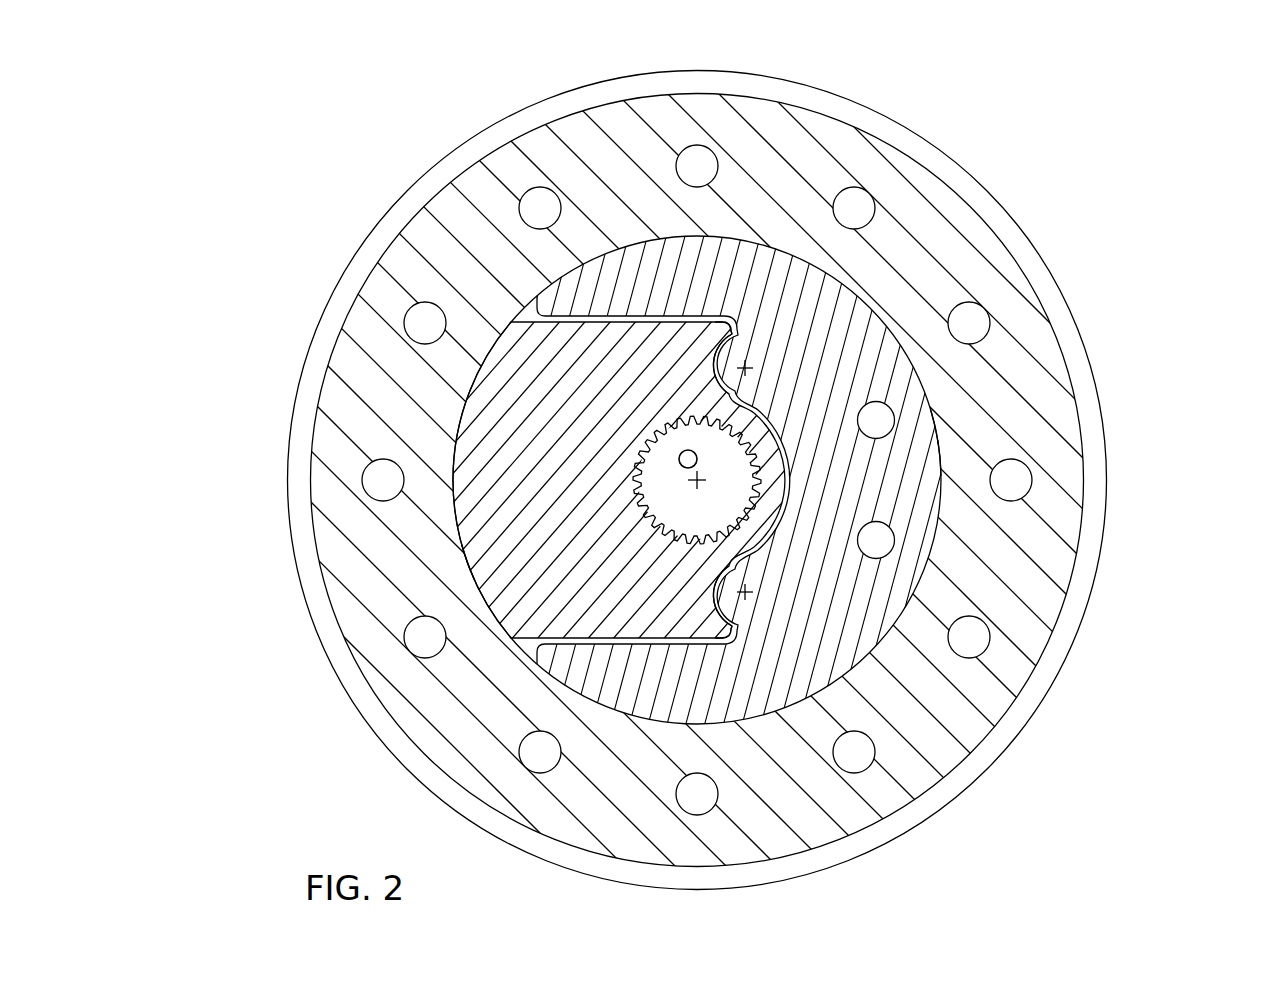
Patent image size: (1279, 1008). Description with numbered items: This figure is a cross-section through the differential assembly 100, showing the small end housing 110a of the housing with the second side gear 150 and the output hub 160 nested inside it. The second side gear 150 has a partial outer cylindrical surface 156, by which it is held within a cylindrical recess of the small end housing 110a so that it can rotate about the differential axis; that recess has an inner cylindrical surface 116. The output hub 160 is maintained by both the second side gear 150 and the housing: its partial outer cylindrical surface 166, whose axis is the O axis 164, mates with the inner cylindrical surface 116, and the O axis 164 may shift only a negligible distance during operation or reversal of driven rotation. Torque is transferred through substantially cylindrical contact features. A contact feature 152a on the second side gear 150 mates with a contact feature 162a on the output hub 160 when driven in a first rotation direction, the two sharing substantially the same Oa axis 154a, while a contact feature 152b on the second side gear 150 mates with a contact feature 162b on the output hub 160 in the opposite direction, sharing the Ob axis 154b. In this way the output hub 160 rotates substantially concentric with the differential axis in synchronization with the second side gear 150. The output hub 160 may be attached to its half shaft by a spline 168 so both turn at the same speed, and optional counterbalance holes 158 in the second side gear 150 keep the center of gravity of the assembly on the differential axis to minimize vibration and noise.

The differential assembly 100 is at (985, 125).
The small end housing 110a is at (583, 150).
The inner cylindrical surface 116 is at (937, 427).
The second side gear 150 is at (670, 270).
The contact feature 152a is at (723, 600).
The contact feature 152b is at (728, 390).
The Oa axis 154a is at (790, 603).
The Ob axis 154b is at (788, 332).
The partial outer cylindrical surface 156 is at (940, 458).
The counterbalance holes 158 is at (878, 416).
The output hub 160 is at (497, 463).
The contact feature 162a is at (707, 615).
The contact feature 162b is at (703, 358).
The O axis 164 is at (673, 465).
The partial outer cylindrical surface 166 is at (475, 563).
The spline 168 is at (783, 448).